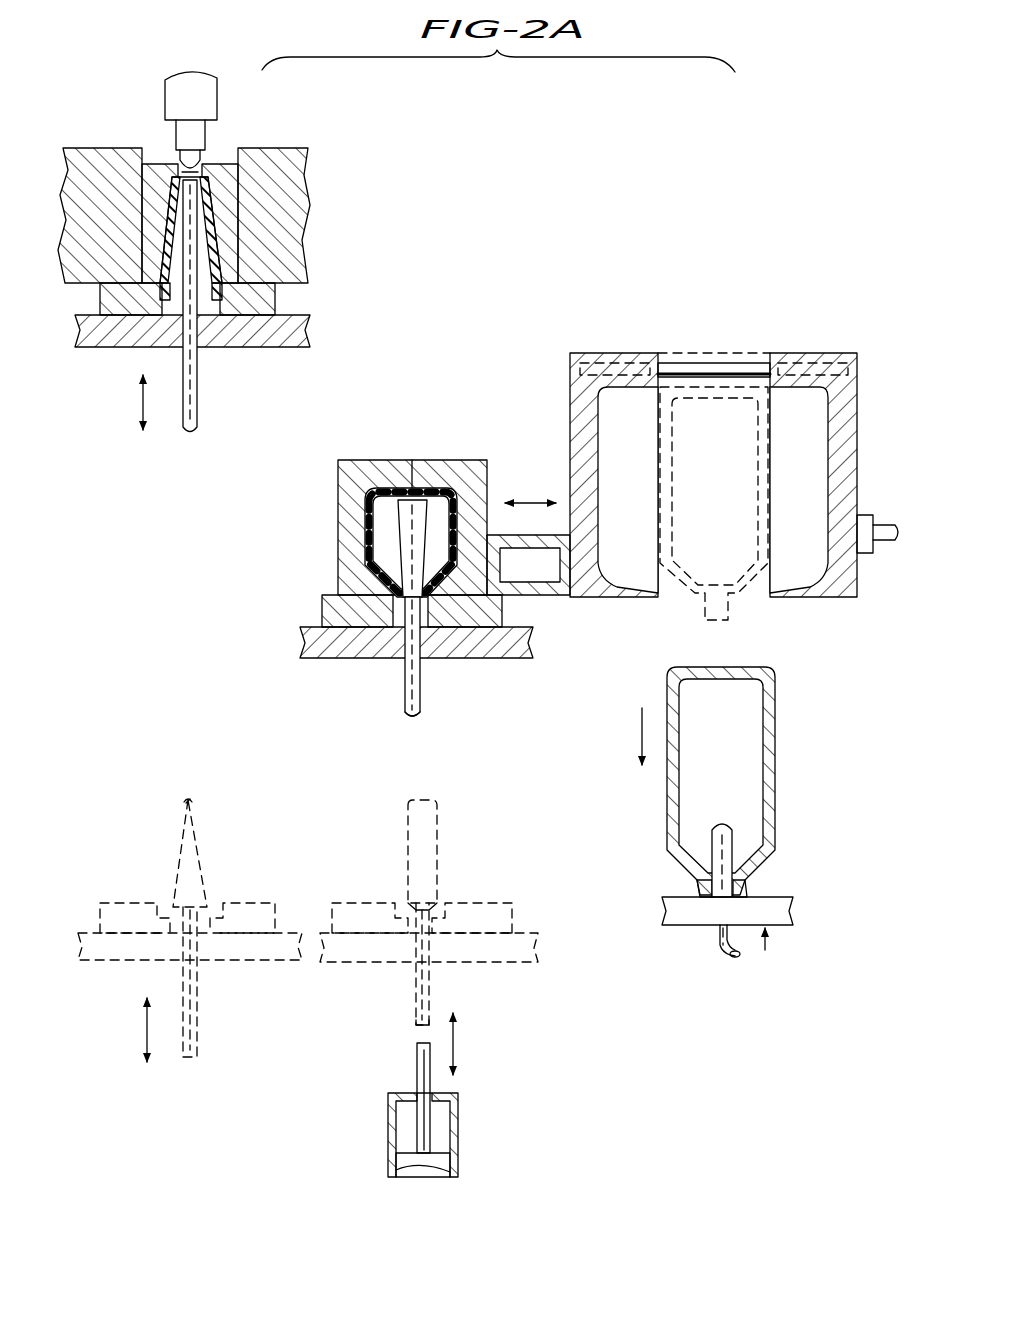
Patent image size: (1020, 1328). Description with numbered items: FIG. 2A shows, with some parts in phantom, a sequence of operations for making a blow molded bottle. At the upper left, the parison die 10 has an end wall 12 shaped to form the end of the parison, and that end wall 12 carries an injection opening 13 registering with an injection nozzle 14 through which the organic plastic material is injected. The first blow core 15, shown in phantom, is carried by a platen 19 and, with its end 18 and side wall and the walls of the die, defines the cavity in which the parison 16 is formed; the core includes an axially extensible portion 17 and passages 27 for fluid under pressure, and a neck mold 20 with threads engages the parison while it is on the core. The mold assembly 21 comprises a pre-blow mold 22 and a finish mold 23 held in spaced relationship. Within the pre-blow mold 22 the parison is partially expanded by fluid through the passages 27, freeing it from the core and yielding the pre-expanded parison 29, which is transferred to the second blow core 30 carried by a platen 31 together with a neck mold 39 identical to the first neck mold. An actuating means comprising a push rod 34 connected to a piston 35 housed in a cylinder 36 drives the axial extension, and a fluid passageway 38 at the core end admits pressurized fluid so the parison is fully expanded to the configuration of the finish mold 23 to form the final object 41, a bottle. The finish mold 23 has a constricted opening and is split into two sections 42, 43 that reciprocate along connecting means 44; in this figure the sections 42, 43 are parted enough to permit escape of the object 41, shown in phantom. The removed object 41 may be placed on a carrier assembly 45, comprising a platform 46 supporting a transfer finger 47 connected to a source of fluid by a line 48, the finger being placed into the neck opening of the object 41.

The parison die 10 is at (137, 243).
The end wall 12 is at (188, 178).
The injection opening 13 is at (200, 172).
The injection nozzle 14 is at (207, 108).
The first blow core 15 is at (207, 848).
The parison 16 is at (207, 235).
The axially extensible portion 17 is at (197, 420).
The end 18 is at (190, 800).
The platen 19 is at (92, 330).
The neck mold 20 is at (270, 300).
The mold assembly 21 is at (555, 345).
The pre-blow mold 22 is at (455, 462).
The finish mold 23 is at (616, 355).
The passages 27 is at (197, 375).
The pre-expanded parison 29 is at (370, 528).
The blow core 30 is at (437, 835).
The platen 31 is at (510, 658).
The push rod 34 is at (420, 697).
The piston 35 is at (435, 1165).
The cylinder 36 is at (455, 1125).
The fluid passageway 38 is at (405, 712).
The neck mold 39 is at (520, 910).
The final object 41 is at (760, 475).
The finish mold section 42 is at (835, 365).
The finish mold section 43 is at (575, 405).
The connecting means 44 is at (725, 372).
The carrier assembly 45 is at (765, 950).
The platform 46 is at (785, 910).
The transfer finger 47 is at (732, 838).
The line 48 is at (718, 962).